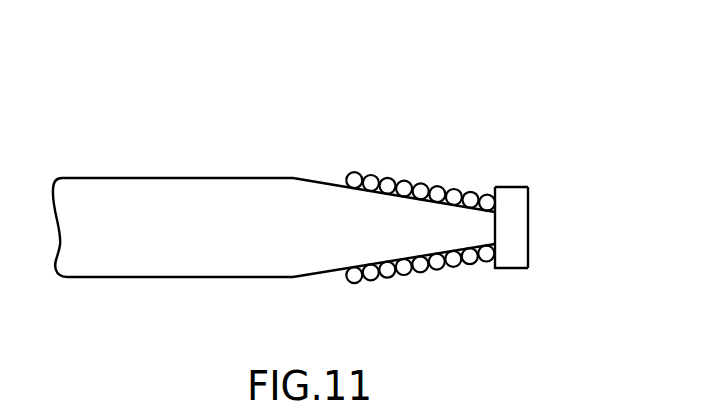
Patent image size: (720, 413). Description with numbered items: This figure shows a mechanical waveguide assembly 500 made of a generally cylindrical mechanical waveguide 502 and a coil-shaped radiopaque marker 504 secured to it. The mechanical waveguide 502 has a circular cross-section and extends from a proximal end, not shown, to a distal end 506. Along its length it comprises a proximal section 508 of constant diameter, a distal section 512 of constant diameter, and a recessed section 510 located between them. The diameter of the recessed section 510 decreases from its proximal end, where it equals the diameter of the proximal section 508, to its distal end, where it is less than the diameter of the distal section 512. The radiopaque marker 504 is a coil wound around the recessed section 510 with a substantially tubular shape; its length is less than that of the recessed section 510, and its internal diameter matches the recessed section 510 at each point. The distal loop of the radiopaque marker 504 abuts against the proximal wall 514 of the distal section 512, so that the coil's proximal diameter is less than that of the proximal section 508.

The mechanical waveguide assembly 500 is at (547, 82).
The mechanical waveguide 502 is at (88, 193).
The radiopaque marker 504 is at (354, 172).
The distal end 506 is at (530, 225).
The proximal section 508 is at (137, 175).
The recessed section 510 is at (350, 229).
The distal section 512 is at (516, 202).
The proximal wall 514 is at (493, 187).